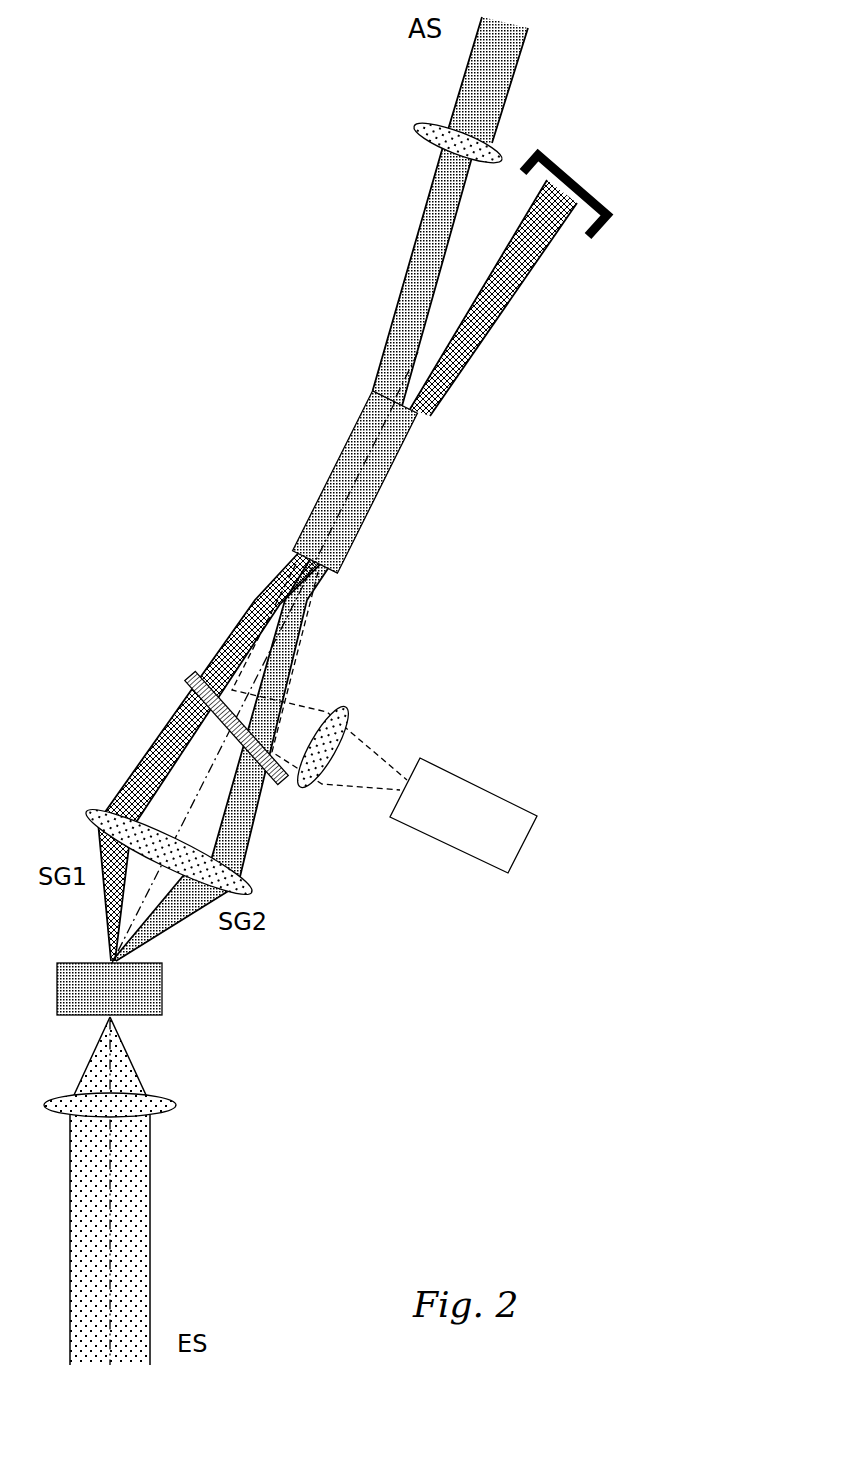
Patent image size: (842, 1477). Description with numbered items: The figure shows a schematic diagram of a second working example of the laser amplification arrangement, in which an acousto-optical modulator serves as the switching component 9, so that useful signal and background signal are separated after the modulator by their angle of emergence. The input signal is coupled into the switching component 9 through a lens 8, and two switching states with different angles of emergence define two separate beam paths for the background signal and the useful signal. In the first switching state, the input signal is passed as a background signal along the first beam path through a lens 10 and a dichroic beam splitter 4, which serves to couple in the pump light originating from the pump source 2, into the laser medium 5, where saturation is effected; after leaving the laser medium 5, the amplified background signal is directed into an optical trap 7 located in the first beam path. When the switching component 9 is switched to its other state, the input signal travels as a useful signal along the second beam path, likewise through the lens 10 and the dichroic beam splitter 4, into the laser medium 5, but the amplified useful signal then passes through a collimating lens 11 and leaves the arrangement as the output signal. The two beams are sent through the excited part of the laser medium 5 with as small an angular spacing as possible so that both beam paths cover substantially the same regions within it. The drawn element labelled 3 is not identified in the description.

The pump source 2 is at (507, 816).
The lens 3 is at (333, 737).
The dichroic beam splitter 4 is at (197, 672).
The laser medium 5 is at (373, 480).
The optical trap 7 is at (572, 185).
The lens 8 is at (142, 1102).
The switching component 9 is at (143, 989).
The lens 10 is at (230, 877).
The collimating lens 11 is at (438, 137).